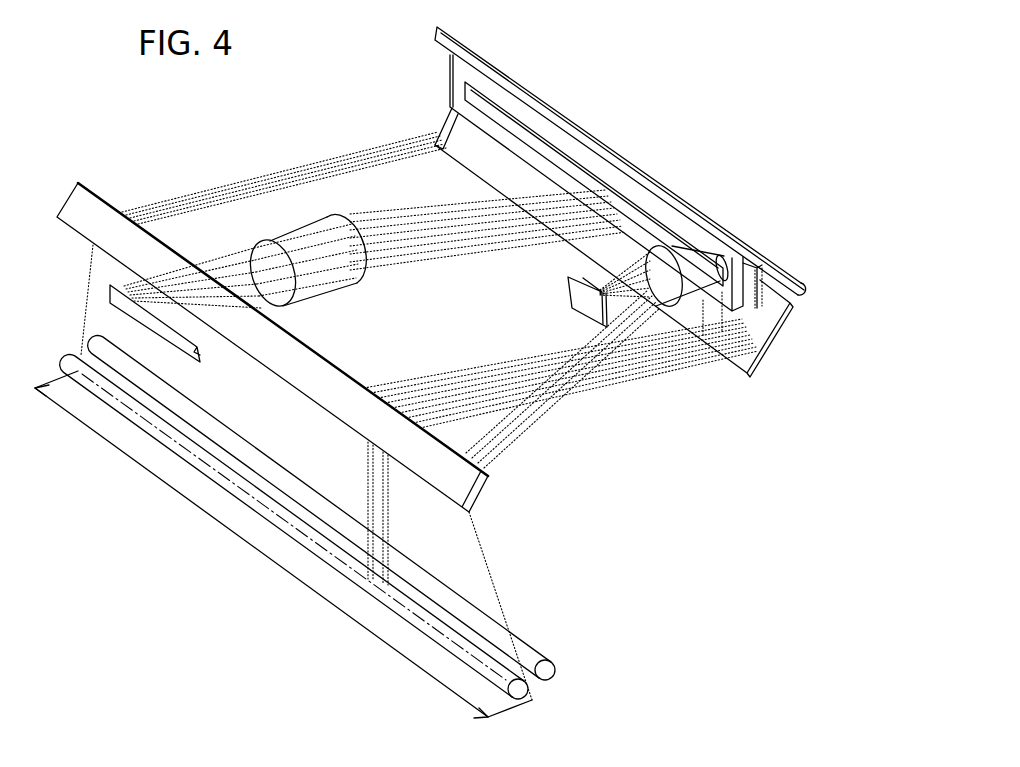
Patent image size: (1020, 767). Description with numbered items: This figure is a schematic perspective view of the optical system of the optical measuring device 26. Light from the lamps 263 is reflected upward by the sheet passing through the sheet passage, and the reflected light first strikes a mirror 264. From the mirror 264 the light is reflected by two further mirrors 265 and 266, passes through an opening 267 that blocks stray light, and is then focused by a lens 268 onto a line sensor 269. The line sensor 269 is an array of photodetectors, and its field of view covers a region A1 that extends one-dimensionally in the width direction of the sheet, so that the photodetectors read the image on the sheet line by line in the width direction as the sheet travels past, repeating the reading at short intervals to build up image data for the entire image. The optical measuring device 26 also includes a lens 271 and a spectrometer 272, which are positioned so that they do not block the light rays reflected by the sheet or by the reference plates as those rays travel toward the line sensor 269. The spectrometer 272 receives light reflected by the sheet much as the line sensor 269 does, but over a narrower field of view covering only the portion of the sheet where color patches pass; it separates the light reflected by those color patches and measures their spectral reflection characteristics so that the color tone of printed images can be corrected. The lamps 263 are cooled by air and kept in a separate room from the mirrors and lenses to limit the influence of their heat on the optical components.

The optical measuring device 26 is at (317, 106).
The lamps 263 is at (470, 614).
The mirror 264 is at (488, 479).
The mirror 265 is at (782, 328).
The mirror 266 is at (757, 257).
The opening 267 is at (522, 129).
The lens 268 is at (297, 232).
The line sensor 269 is at (200, 356).
The lens 271 is at (671, 253).
The spectrometer 272 is at (568, 278).
The region A1 is at (283, 544).